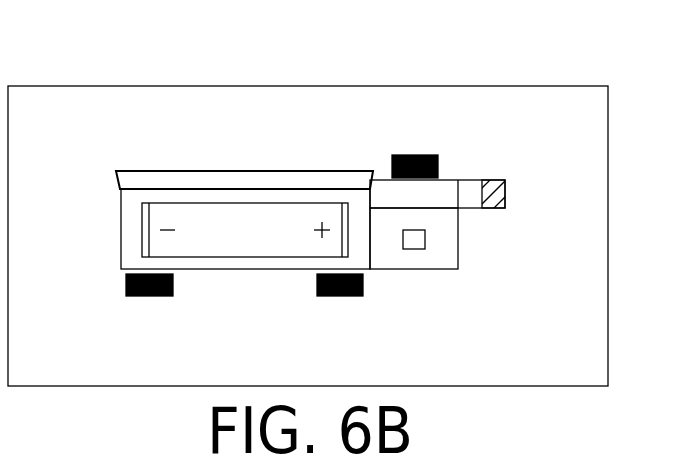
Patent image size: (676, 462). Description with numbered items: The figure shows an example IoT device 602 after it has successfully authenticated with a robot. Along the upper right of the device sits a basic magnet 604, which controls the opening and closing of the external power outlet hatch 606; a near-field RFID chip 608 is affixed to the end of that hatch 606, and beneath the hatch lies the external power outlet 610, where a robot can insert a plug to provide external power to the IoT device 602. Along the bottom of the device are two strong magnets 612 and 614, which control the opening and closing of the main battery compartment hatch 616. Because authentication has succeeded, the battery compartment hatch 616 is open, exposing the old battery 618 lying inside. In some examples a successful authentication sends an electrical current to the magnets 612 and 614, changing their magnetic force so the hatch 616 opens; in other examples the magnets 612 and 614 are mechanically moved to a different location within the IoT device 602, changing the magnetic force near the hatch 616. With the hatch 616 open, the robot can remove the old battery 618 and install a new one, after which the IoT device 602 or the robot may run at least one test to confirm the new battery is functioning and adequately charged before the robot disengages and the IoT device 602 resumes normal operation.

The IoT device 602 is at (71, 86).
The basic magnet 604 is at (413, 153).
The external power outlet hatch 606 is at (447, 178).
The near-field RFID chip 608 is at (491, 180).
The external power outlet 610 is at (425, 240).
The strong magnet 612 is at (342, 296).
The strong magnet 614 is at (147, 296).
The main battery compartment hatch 616 is at (120, 204).
The battery 618 is at (136, 252).